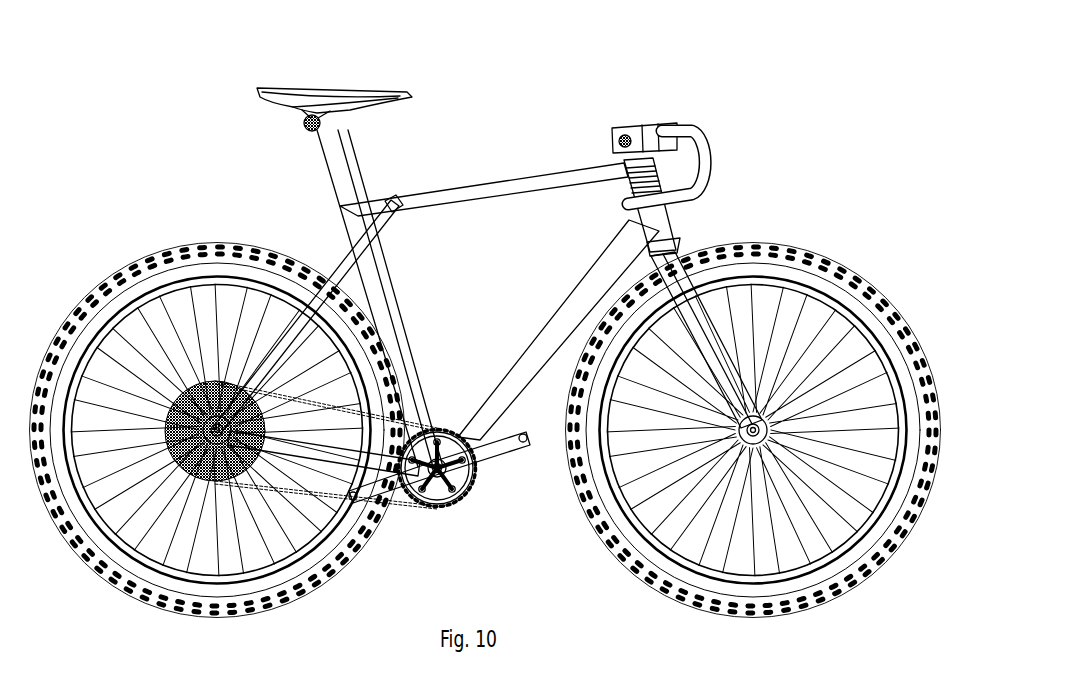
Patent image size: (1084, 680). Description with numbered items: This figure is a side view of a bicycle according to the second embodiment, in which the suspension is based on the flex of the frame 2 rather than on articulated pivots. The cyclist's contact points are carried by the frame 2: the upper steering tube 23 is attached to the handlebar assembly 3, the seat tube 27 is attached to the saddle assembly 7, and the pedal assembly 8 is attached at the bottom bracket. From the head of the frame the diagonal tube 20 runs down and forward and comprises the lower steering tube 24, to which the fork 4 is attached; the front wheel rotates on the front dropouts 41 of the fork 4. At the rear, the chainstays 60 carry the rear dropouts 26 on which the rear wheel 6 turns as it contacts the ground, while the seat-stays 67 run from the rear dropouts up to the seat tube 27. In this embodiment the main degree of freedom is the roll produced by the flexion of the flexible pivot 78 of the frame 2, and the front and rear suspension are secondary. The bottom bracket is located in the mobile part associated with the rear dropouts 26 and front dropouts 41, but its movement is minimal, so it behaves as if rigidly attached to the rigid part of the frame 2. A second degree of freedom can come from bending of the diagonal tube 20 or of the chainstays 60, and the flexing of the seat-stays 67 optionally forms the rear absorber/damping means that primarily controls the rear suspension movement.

The frame 2 is at (482, 150).
The handlebar assembly 3 is at (706, 123).
The fork 4 is at (676, 252).
The rear wheel 6 is at (103, 587).
The saddle assembly 7 is at (339, 82).
The pedal assembly 8 is at (484, 496).
The diagonal tube 20 is at (572, 307).
The upper steering tube 23 is at (637, 172).
The lower steering tube 24 is at (655, 226).
The rear dropouts 26 is at (216, 430).
The seat tube 27 is at (350, 211).
The front dropouts 41 is at (760, 437).
The chainstays 60 is at (310, 460).
The seat-stays 67 is at (342, 266).
The flexible pivot 78 is at (417, 385).